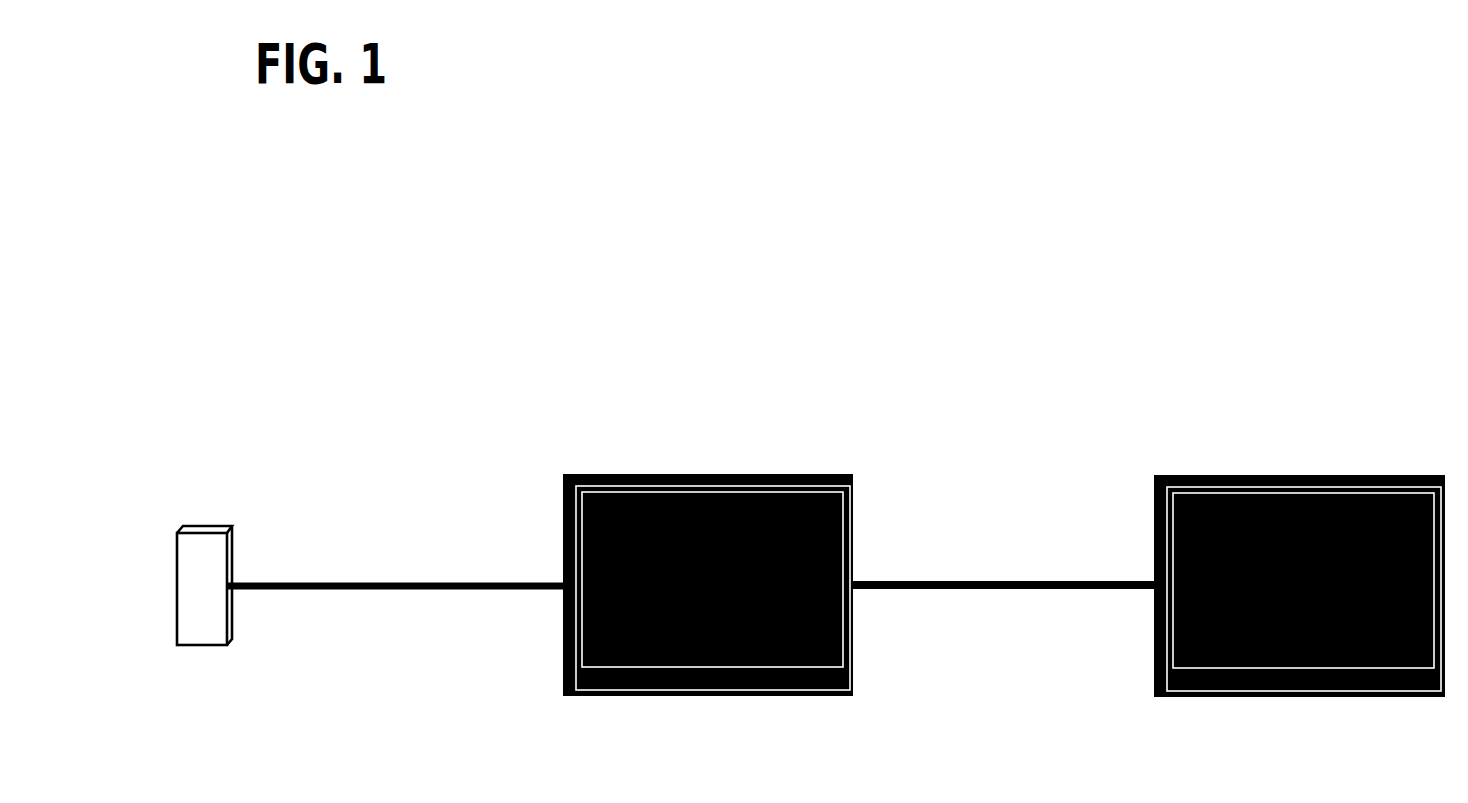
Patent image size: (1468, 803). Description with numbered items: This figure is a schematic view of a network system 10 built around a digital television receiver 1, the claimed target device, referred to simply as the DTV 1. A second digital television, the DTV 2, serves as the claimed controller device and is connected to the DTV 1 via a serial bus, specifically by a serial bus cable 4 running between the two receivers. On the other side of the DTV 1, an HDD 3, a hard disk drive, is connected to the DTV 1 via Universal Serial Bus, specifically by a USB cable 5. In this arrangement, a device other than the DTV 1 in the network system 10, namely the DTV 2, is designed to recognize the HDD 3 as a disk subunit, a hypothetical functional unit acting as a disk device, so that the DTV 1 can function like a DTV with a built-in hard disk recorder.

The digital television receiver 1 is at (752, 739).
The DTV 2 is at (1342, 741).
The HDD 3 is at (187, 617).
The IEEE 1394 serial bus cable 4 is at (1004, 640).
The USB cable 5 is at (396, 607).
The IEEE 1394 network system 10 is at (1071, 353).